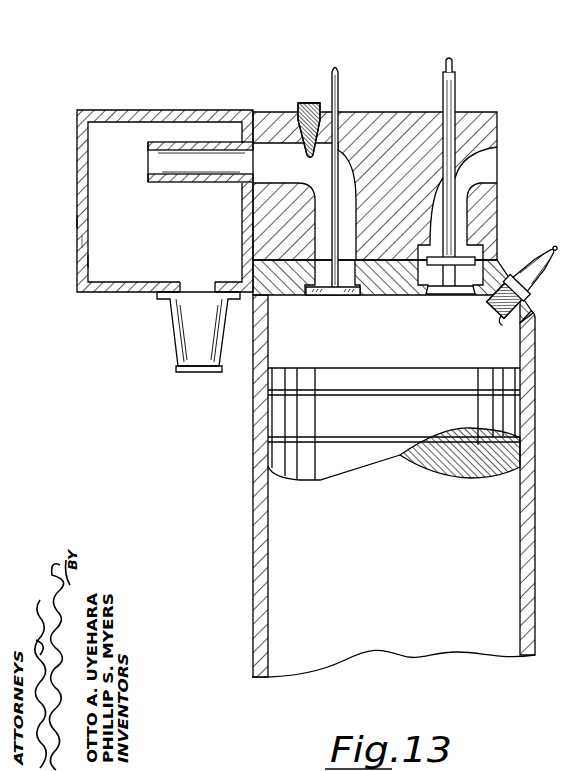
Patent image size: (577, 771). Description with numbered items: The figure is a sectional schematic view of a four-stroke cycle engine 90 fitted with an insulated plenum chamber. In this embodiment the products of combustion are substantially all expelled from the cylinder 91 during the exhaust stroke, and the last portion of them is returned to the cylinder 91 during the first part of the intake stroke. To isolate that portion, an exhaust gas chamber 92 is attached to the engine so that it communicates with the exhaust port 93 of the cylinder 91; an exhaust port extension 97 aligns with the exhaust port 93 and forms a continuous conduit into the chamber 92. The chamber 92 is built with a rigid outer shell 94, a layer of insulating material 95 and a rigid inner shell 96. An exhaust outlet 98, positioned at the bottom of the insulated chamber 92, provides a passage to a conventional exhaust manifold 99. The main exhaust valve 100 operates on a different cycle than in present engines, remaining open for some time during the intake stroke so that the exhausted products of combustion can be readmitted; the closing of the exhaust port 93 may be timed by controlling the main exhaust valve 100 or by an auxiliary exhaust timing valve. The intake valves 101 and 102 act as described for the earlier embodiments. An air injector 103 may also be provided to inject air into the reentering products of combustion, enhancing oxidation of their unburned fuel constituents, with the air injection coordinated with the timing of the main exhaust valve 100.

The four-stroke cycle engine 90 is at (383, 112).
The cylinder 91 is at (278, 453).
The exhaust gas chamber 92 is at (76, 203).
The exhaust port 93 is at (339, 259).
The rigid outer shell 94 is at (80, 218).
The layer of insulating material 95 is at (80, 238).
The rigid inner shell 96 is at (80, 257).
The exhaust port extension 97 is at (188, 160).
The exhaust outlet 98 is at (193, 291).
The exhaust manifold 99 is at (195, 352).
The main exhaust valve 100 is at (327, 291).
The intake valve 101 is at (452, 280).
The intake valve 102 is at (449, 117).
The air injector 103 is at (304, 104).